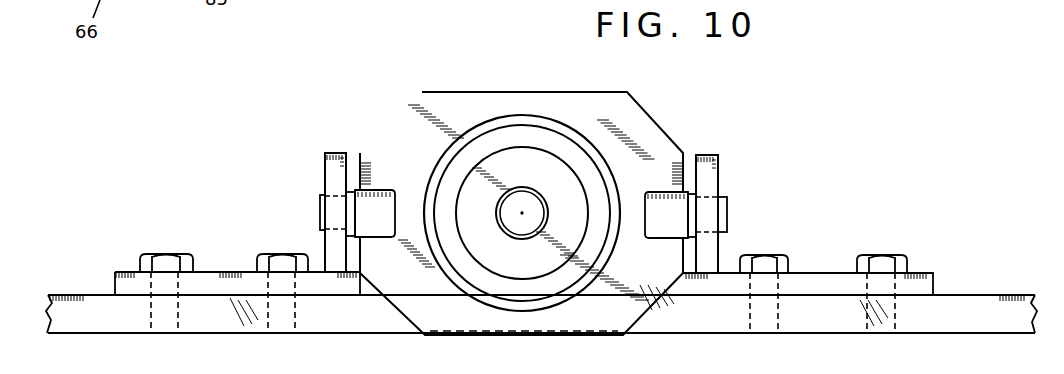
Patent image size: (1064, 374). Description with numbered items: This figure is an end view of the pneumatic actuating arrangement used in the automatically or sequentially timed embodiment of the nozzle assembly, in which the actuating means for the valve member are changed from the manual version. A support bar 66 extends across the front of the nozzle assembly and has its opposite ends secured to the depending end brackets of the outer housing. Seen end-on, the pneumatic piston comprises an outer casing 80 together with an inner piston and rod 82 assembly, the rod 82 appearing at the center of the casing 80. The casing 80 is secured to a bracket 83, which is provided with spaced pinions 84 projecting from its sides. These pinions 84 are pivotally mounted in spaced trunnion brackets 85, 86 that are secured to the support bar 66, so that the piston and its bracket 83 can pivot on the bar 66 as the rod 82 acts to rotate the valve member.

The support bar 66 is at (956, 312).
The outer casing 80 is at (547, 140).
The rod 82 is at (507, 207).
The bracket 83 is at (488, 100).
The pinion 84 is at (322, 212).
The trunnion bracket 85 is at (327, 169).
The trunnion bracket 86 is at (720, 160).